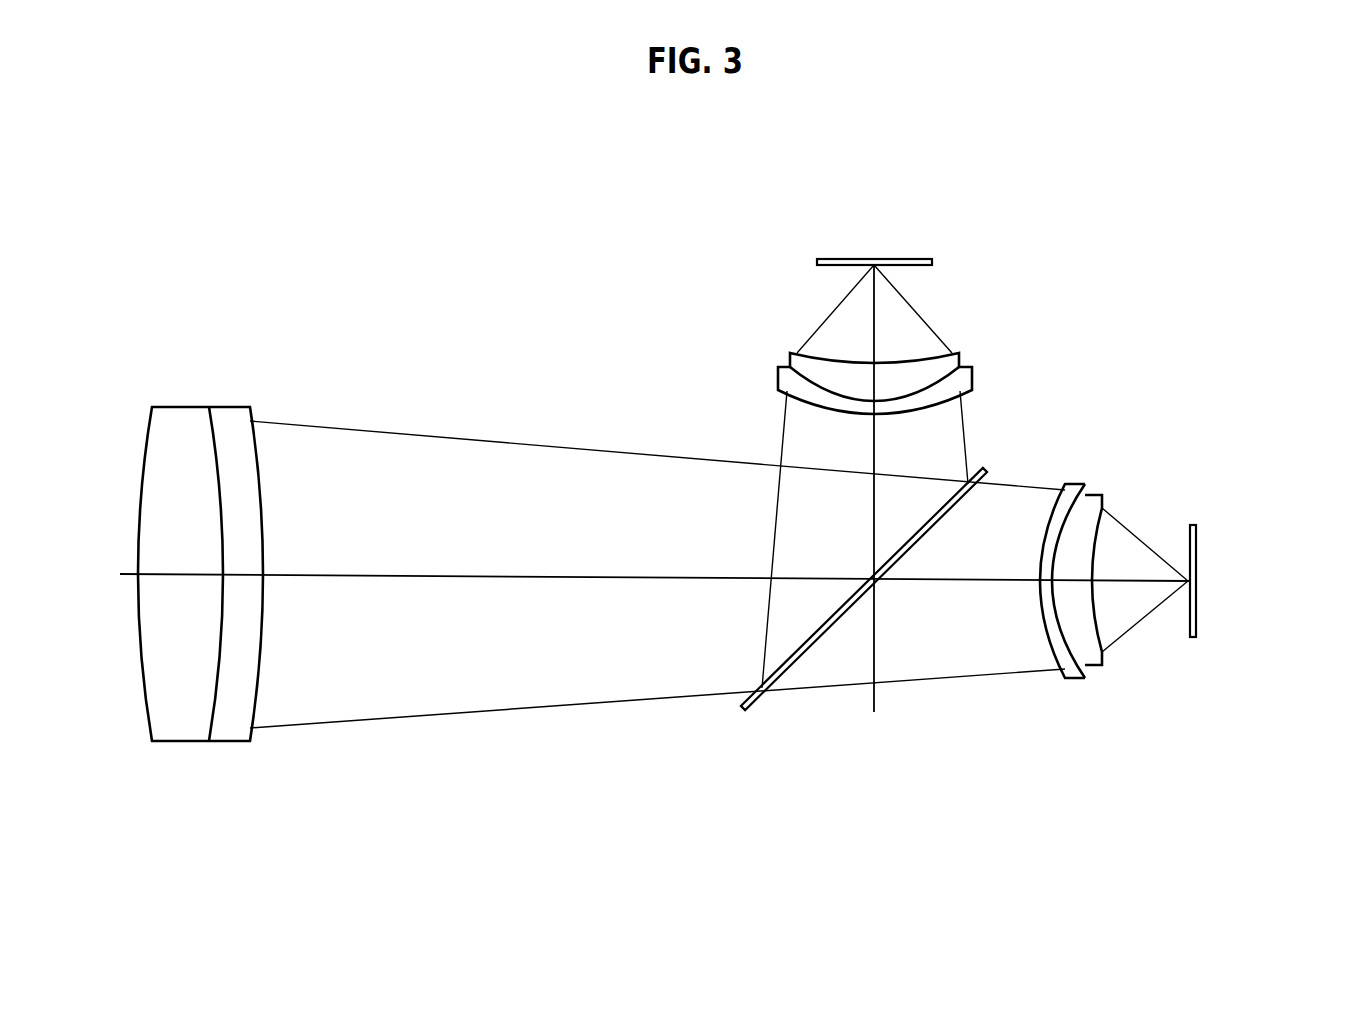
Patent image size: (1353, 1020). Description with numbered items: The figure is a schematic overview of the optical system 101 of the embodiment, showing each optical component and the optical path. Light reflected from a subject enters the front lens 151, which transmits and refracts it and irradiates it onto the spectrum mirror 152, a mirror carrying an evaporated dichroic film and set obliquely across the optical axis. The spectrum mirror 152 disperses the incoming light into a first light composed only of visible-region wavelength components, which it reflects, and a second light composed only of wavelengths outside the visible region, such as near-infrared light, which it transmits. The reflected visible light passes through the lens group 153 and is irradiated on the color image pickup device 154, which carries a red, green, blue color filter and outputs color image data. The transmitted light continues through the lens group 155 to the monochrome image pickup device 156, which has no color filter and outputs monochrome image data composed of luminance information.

The optical system 101 is at (135, 179).
The front lens 151 is at (176, 407).
The spectrum mirror 152 is at (758, 697).
The lens group 153 is at (790, 353).
The color image pickup device 154 is at (903, 259).
The lens group 155 is at (1095, 495).
The monochrome image pickup device 156 is at (1198, 545).